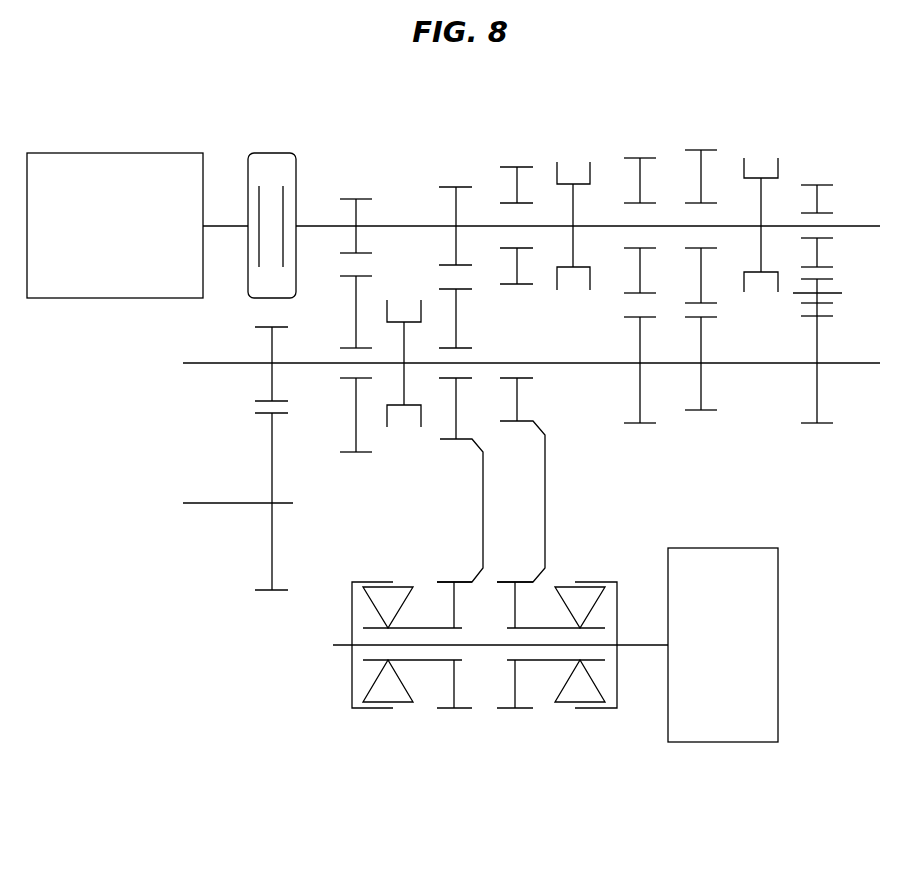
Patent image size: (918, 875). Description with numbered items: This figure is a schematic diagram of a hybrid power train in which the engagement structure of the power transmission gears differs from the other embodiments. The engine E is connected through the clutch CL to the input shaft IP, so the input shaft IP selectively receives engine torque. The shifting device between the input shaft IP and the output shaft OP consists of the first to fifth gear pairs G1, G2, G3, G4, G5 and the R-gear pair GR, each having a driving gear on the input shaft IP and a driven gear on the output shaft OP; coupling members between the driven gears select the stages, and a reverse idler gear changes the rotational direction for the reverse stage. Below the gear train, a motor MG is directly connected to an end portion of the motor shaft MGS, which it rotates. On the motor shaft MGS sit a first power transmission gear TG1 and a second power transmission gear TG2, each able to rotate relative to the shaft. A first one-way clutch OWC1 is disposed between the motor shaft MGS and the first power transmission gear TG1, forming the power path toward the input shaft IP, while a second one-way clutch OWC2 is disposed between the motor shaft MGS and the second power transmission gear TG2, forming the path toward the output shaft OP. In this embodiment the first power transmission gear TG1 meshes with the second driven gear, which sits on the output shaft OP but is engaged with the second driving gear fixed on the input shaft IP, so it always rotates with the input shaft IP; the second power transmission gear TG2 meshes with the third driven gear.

The engine E is at (137, 225).
The clutch CL is at (270, 152).
The input shaft IP is at (860, 226).
The output shaft OP is at (860, 363).
The first gear pair G1 is at (356, 314).
The second gear pair G2 is at (460, 373).
The third gear pair G3 is at (521, 363).
The fourth gear pair G4 is at (640, 279).
The fifth gear pair G5 is at (701, 269).
The R-gear pair GR is at (817, 293).
The first one-way clutch OWC1 is at (403, 708).
The second one-way clutch OWC2 is at (570, 708).
The first power transmission gear TG1 is at (462, 708).
The second power transmission gear TG2 is at (523, 708).
The motor shaft MGS is at (633, 645).
The motor MG is at (723, 645).